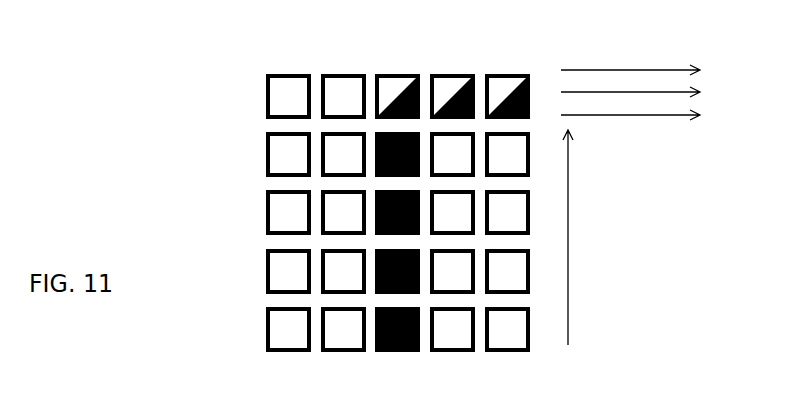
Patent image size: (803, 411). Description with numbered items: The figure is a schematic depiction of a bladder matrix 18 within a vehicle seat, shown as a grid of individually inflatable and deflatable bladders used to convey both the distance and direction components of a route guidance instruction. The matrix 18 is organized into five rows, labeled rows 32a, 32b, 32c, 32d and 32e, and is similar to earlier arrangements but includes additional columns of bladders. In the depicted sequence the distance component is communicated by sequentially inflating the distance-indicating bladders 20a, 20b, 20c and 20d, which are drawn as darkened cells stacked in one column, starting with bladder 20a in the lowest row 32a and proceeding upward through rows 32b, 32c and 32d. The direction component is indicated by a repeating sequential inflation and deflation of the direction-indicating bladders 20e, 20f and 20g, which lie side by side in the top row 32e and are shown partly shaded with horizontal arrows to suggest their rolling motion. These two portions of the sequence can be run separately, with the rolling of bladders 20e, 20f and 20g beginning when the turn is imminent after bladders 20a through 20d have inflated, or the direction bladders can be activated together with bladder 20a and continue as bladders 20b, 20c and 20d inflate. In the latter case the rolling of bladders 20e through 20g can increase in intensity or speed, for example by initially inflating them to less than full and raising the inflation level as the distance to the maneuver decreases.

The bladder matrix 18 is at (553, 47).
The distance-indicating bladder 20a is at (392, 352).
The distance-indicating bladder 20b is at (375, 268).
The distance-indicating bladder 20c is at (375, 211).
The distance-indicating bladder 20d is at (375, 157).
The direction-indicating bladder 20e is at (390, 74).
The direction-indicating bladder 20f is at (445, 74).
The direction-indicating bladder 20g is at (505, 74).
The row of bladders 32a is at (347, 346).
The row of bladders 32b is at (343, 273).
The row of bladders 32c is at (350, 215).
The row of bladders 32d is at (348, 153).
The row of bladders 32e is at (354, 71).